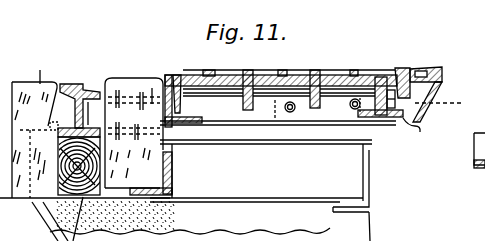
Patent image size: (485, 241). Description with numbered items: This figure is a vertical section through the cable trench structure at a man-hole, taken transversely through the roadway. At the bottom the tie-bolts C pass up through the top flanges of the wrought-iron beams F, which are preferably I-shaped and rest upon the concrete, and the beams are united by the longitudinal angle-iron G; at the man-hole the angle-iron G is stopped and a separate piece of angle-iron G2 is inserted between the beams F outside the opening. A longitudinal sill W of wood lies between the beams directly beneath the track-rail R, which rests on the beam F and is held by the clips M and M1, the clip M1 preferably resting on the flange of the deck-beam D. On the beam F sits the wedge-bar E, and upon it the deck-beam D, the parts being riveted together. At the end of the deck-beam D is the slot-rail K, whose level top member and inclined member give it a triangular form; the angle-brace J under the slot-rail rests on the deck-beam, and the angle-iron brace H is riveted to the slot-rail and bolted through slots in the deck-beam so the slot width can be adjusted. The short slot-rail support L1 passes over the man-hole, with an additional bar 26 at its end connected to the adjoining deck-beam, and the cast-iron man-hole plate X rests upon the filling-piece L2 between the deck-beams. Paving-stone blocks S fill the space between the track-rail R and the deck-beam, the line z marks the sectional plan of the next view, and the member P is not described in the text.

The deck-beam D is at (284, 96).
The filling-piece or support L2 is at (163, 78).
The man-hole plate X is at (298, 80).
The additional bar 26 is at (358, 125).
The section line z z is at (274, 108).
The wedge-bar E is at (278, 132).
The iron beam F is at (256, 173).
The angle-iron G is at (370, 172).
The separate piece of angle-iron G2 is at (174, 170).
The clip M is at (40, 78).
The track-rail R is at (79, 101).
The clip M1 is at (94, 113).
The longitudinal sill W is at (77, 166).
The paving-stone block S is at (134, 124).
The tie-bolt C is at (201, 219).
The slot-rail K is at (426, 66).
The angle-brace J is at (440, 86).
The slot-rail support L1 is at (396, 70).
The angle-iron brace H is at (422, 121).
The partial member P is at (479, 150).